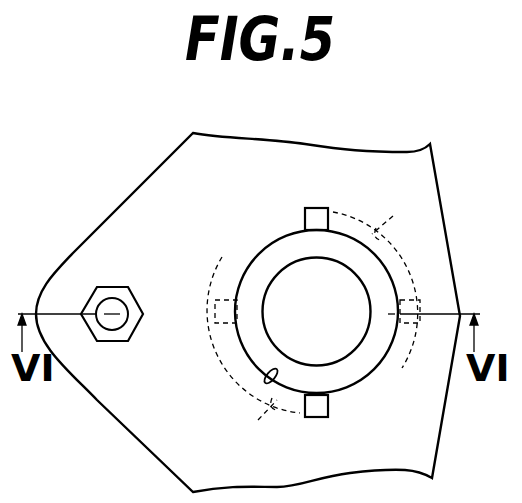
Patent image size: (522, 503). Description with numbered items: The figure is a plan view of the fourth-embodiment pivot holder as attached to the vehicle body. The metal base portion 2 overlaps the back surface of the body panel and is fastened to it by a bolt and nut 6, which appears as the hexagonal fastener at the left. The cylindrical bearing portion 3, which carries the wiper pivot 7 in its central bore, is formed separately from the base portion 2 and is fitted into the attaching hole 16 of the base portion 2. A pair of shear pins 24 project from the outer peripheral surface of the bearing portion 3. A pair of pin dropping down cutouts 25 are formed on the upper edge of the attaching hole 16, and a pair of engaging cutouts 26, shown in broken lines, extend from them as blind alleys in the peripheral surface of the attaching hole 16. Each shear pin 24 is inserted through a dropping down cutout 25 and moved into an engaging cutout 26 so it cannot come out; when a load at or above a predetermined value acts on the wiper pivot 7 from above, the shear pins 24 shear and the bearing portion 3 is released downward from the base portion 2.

The base portion 2 is at (140, 441).
The bearing portion 3 is at (277, 242).
The nut 6 is at (138, 305).
The wiper pivot 7 is at (347, 355).
The attaching hole 16 is at (268, 383).
The shear pin 24 is at (316, 312).
The pin dropping down cutout 25 is at (314, 210).
The engaging cutout 26 is at (330, 320).